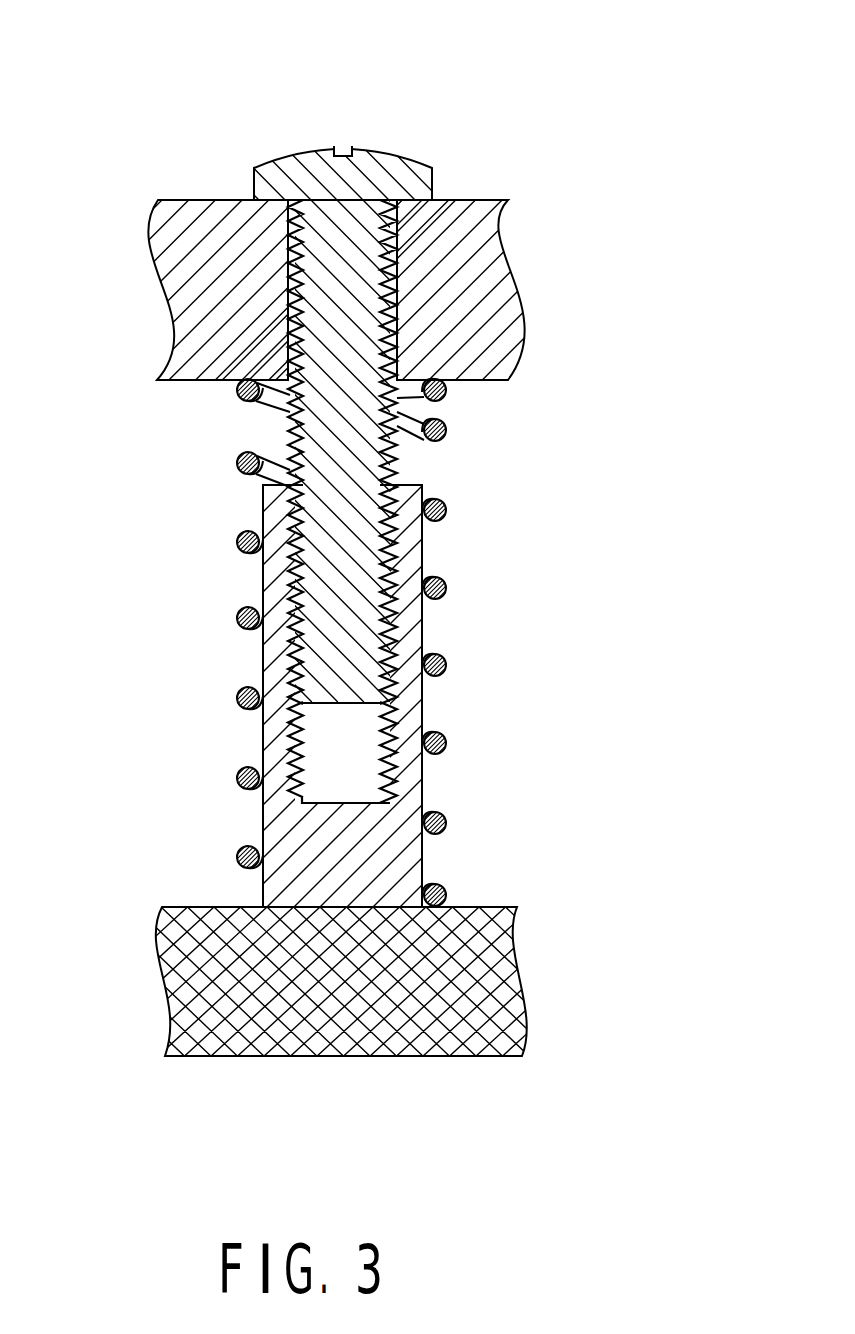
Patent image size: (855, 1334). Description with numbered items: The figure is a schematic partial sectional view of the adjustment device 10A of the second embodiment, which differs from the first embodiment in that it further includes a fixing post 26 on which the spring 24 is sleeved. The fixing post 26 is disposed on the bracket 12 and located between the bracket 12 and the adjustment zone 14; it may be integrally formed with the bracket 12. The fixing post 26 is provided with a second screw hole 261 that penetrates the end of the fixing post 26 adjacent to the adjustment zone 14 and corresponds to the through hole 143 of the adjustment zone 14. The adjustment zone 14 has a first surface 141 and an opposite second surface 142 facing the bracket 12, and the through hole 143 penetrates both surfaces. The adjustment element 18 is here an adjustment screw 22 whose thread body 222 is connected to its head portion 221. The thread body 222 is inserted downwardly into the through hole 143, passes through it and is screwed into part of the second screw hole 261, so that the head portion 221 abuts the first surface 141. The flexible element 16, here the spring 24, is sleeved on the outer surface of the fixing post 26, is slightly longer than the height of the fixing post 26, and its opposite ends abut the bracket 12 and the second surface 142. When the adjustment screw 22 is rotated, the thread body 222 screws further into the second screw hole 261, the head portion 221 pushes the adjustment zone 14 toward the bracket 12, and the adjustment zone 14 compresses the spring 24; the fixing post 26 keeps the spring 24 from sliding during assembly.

The adjustment device 10A is at (87, 28).
The bracket 12 is at (205, 987).
The adjustment zone 14 is at (200, 288).
The first surface 141 is at (188, 188).
The second surface 142 is at (198, 394).
The through hole 143 is at (285, 333).
The adjustment screw 22 is at (427, 383).
The adjustment element 18 is at (427, 383).
The head portion 221 is at (355, 158).
The thread body 222 is at (357, 455).
The spring 24 is at (447, 592).
The flexible element 16 is at (404, 642).
The fixing post 26 is at (424, 696).
The second screw hole 261 is at (353, 775).